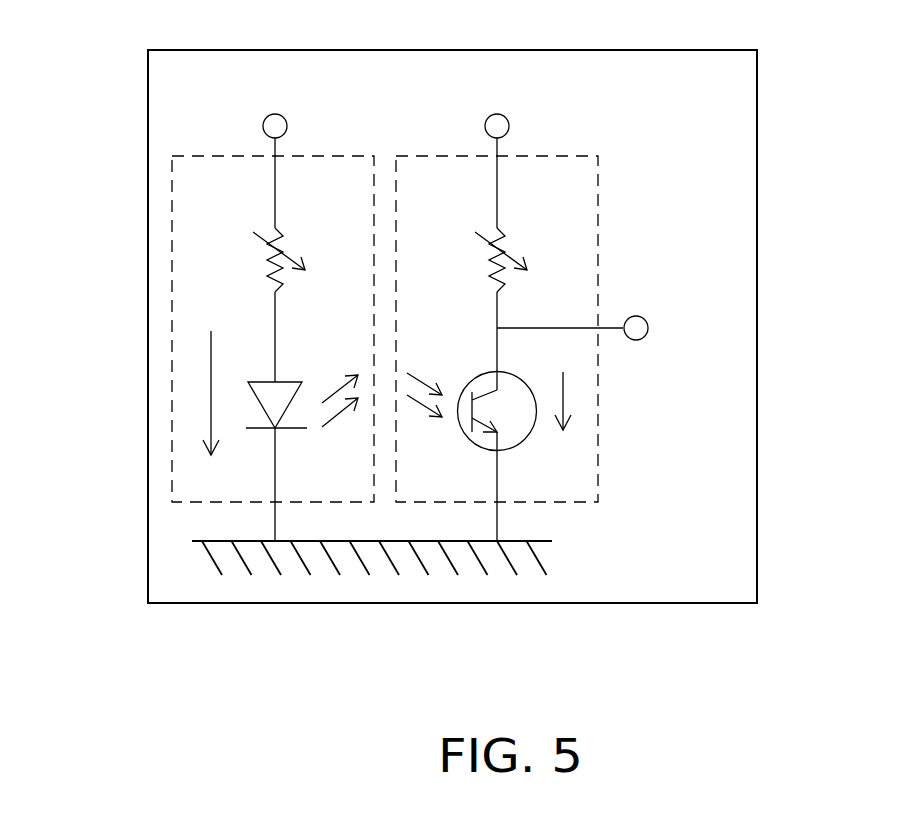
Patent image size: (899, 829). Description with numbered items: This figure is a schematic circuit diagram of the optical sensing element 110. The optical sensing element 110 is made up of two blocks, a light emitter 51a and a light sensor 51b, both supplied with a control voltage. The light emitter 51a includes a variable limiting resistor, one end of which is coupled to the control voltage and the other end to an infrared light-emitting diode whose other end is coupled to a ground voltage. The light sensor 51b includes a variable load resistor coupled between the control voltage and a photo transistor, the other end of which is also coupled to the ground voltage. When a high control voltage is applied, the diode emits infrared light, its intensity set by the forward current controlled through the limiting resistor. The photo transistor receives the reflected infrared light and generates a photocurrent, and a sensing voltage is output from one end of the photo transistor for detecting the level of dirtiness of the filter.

The optical sensing element 110 is at (757, 525).
The light emitter 51a is at (322, 152).
The light sensor 51b is at (545, 152).